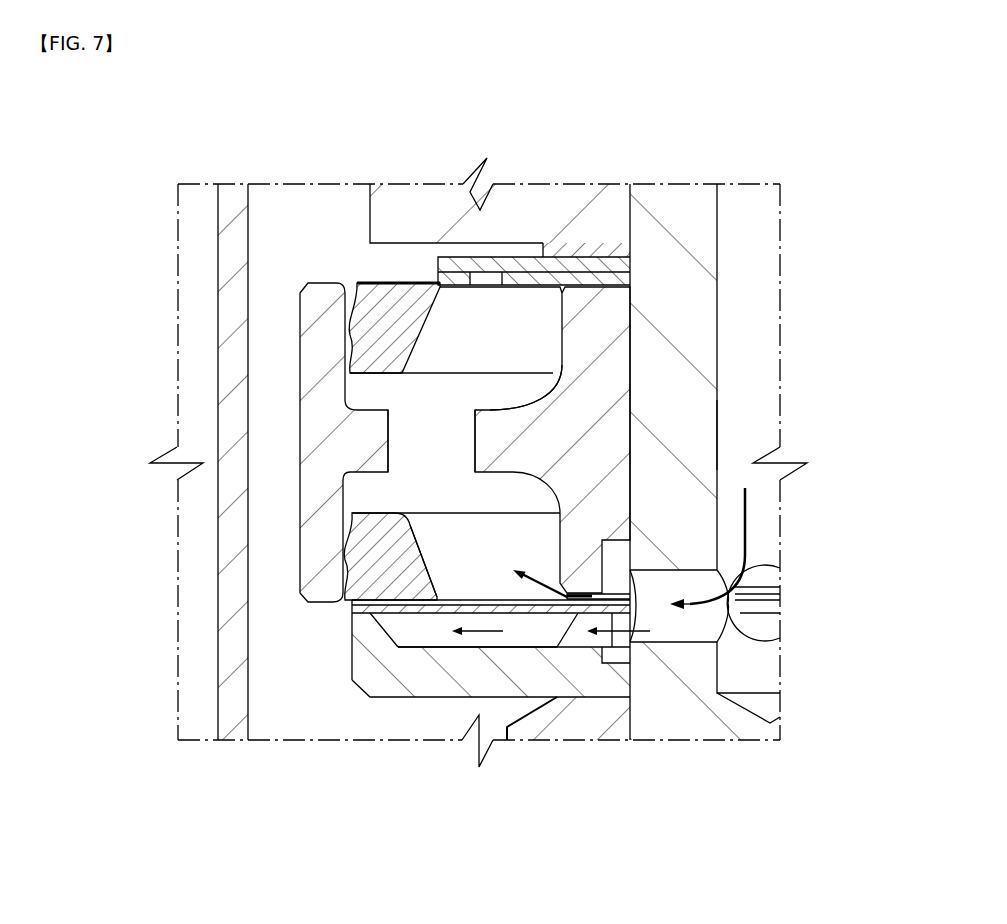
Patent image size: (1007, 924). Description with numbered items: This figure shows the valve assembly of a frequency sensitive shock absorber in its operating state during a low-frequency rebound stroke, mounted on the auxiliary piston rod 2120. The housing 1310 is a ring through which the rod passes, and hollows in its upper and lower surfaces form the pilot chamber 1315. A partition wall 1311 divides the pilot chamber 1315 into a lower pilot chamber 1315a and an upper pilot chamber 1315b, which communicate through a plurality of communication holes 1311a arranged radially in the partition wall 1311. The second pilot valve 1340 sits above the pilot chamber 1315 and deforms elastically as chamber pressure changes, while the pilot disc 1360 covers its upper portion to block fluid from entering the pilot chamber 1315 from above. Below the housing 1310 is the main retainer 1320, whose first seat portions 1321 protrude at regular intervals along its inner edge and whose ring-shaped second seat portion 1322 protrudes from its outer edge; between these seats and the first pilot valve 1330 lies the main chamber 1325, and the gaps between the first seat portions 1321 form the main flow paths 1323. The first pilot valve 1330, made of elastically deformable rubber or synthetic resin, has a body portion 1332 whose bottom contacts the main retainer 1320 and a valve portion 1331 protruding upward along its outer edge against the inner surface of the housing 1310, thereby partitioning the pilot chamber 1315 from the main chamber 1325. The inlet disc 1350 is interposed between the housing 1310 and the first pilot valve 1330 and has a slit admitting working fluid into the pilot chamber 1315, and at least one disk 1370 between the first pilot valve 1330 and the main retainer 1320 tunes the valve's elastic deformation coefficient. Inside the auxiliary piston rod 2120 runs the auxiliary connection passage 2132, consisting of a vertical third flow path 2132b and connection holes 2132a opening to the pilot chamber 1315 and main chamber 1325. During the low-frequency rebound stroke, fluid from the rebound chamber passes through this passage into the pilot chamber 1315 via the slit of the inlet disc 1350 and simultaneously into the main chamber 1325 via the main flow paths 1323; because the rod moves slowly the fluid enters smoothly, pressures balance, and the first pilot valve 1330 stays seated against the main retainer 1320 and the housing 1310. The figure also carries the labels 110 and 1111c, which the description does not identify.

The housing wall 110 is at (284, 661).
The auxiliary piston rod 2120 is at (670, 188).
The auxiliary connection passage 2132 is at (804, 520).
The connection holes 2132a is at (663, 572).
The third flow path 2132b is at (717, 430).
The flow passage 1111c is at (662, 633).
The pilot disc 1360 is at (422, 268).
The housing 1310 is at (313, 351).
The partition wall 1311 is at (492, 410).
The communication holes 1311a is at (437, 439).
The second pilot valve 1340 is at (356, 317).
The pilot chamber 1315 is at (300, 447).
The lower pilot chamber 1315a is at (390, 504).
The upper pilot chamber 1315b is at (387, 401).
The first pilot valve 1330 is at (241, 559).
The valve portion 1331 is at (355, 540).
The body portion 1332 is at (372, 578).
The disk 1370 is at (351, 612).
The inlet disc 1350 is at (590, 597).
The main retainer 1320 is at (461, 731).
The second seat portion 1322 is at (352, 617).
The main chamber 1325 is at (423, 640).
The first seat portions 1321 is at (577, 614).
The main flow paths 1323 is at (596, 710).